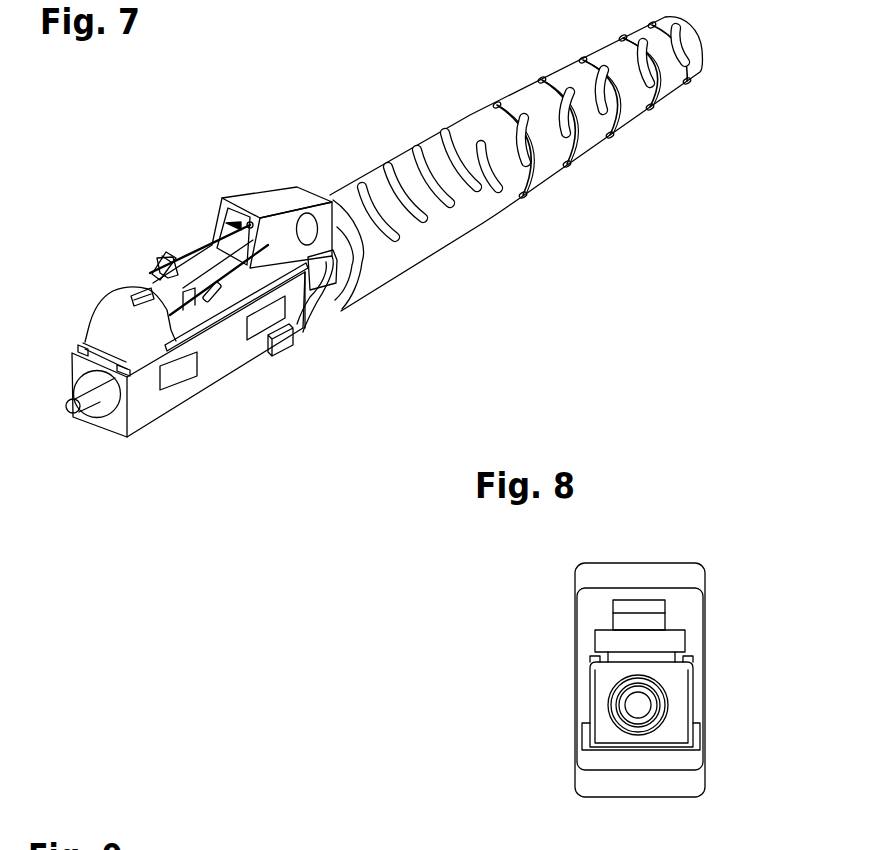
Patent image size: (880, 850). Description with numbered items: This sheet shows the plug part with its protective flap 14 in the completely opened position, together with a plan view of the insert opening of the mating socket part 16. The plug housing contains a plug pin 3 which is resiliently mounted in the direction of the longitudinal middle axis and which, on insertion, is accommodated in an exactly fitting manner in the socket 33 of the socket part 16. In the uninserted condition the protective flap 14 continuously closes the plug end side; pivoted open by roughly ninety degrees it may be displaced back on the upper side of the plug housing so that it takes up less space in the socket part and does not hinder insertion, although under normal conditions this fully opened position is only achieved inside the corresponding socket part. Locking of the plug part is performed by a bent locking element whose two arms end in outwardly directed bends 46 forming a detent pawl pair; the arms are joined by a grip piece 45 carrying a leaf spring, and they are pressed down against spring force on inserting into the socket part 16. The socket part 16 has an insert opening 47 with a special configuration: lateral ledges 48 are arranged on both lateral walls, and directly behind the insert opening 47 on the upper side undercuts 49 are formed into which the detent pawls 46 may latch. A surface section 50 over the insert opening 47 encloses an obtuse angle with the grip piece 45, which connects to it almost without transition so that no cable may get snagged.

In FIG. 7, the plug pin 3 is at (100, 413).
In FIG. 7, the protective flap 14 is at (112, 317).
In FIG. 8, the socket part 16 is at (693, 603).
In FIG. 8, the socket 33 is at (673, 697).
In FIG. 7, the grip piece 45 is at (258, 199).
In FIG. 7, the bend 46 is at (163, 260).
In FIG. 8, the insert opening 47 is at (640, 638).
In FIG. 8, the lateral ledge 48 is at (600, 657).
In FIG. 8, the undercut 49 is at (672, 622).
In FIG. 8, the surface section 50 is at (677, 587).